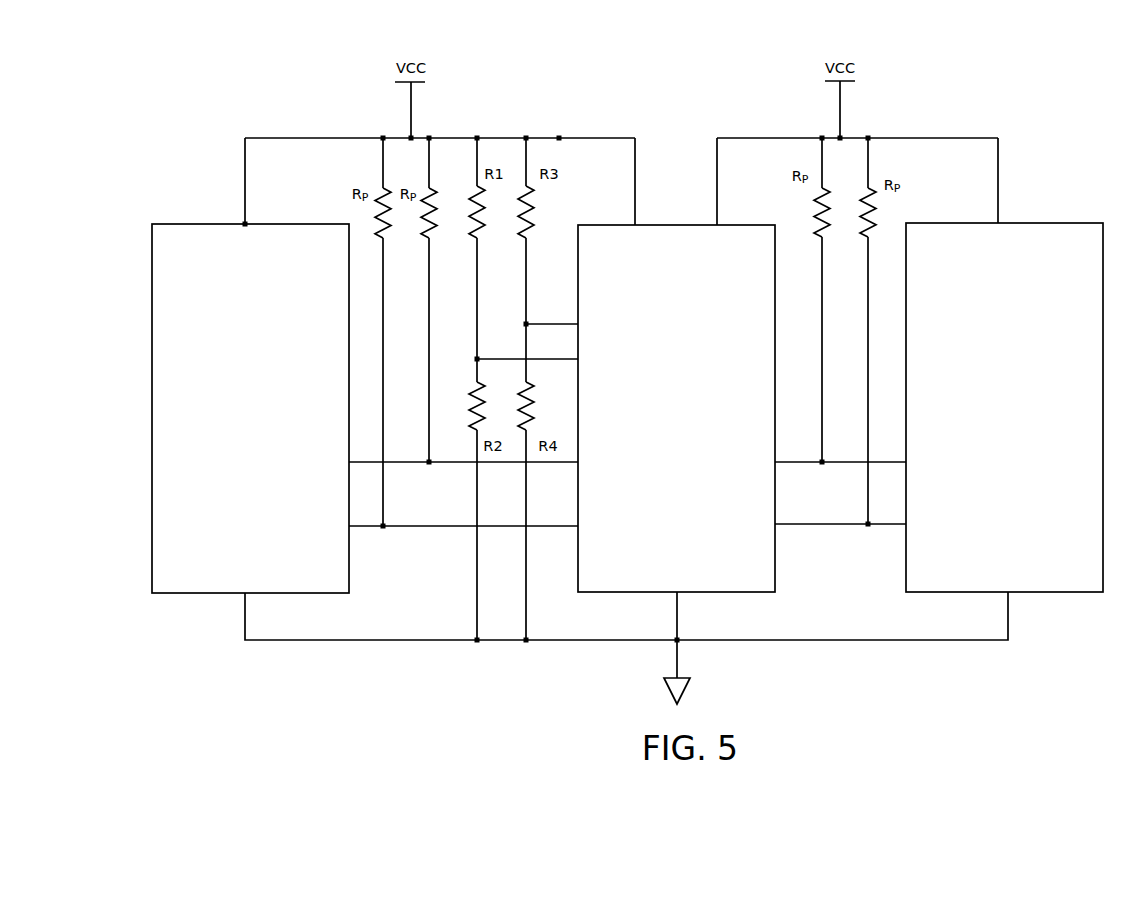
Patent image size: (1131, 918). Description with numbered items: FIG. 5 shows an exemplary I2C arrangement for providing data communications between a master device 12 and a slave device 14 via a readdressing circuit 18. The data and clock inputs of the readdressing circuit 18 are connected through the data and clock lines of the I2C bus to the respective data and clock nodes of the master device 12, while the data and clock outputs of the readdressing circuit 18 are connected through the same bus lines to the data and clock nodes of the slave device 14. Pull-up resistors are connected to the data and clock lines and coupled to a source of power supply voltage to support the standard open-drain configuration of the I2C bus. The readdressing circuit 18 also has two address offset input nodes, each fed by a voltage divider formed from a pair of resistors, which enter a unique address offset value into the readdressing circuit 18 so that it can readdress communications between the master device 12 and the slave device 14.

The master device 12 is at (183, 224).
The slave device 14 is at (1047, 223).
The readdressing circuit 18 is at (775, 574).